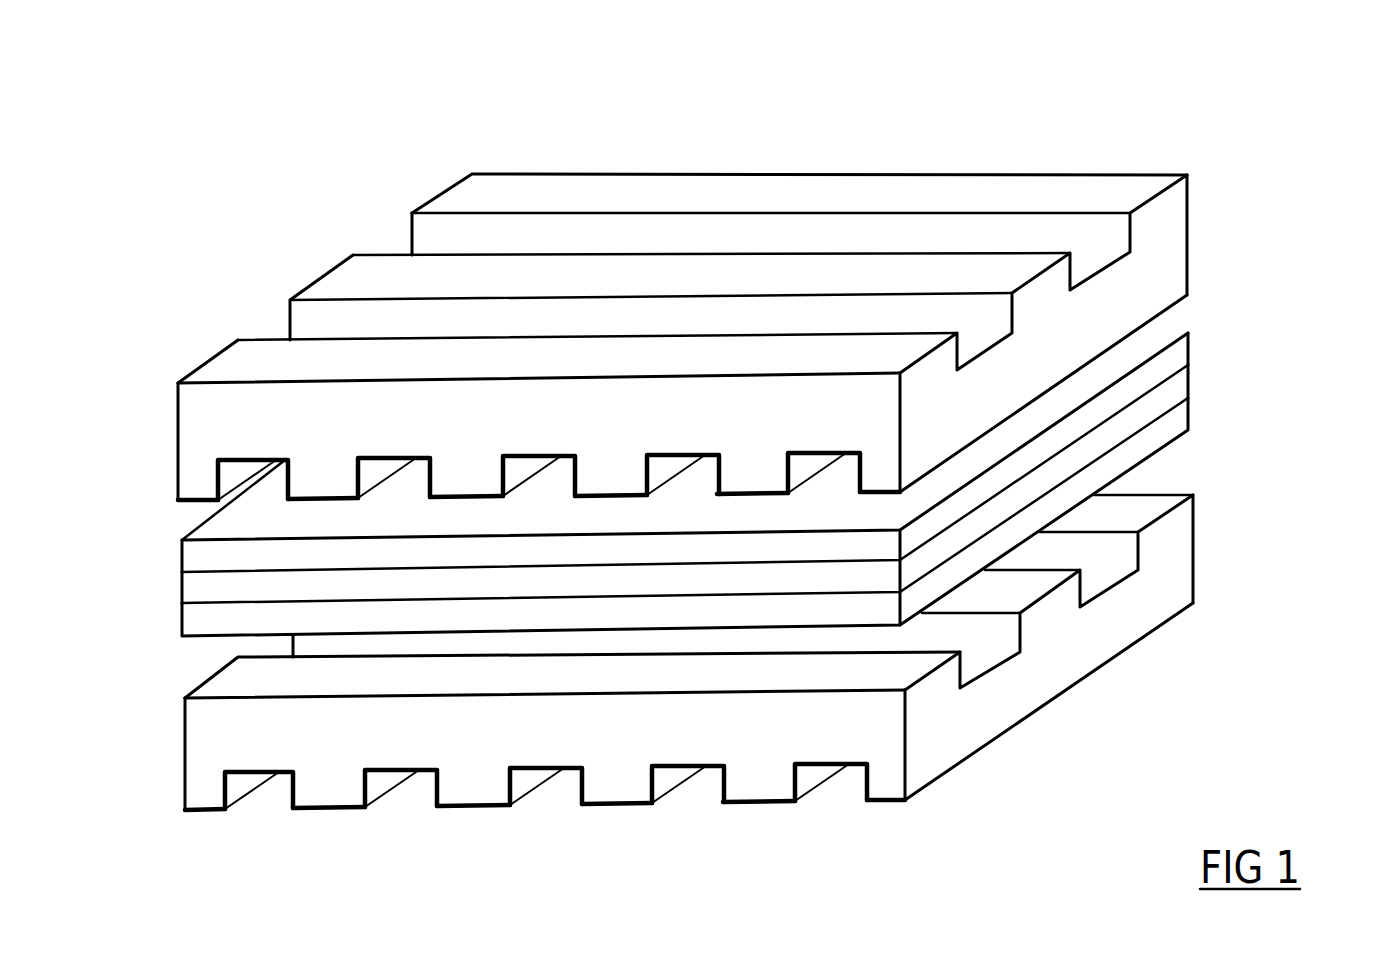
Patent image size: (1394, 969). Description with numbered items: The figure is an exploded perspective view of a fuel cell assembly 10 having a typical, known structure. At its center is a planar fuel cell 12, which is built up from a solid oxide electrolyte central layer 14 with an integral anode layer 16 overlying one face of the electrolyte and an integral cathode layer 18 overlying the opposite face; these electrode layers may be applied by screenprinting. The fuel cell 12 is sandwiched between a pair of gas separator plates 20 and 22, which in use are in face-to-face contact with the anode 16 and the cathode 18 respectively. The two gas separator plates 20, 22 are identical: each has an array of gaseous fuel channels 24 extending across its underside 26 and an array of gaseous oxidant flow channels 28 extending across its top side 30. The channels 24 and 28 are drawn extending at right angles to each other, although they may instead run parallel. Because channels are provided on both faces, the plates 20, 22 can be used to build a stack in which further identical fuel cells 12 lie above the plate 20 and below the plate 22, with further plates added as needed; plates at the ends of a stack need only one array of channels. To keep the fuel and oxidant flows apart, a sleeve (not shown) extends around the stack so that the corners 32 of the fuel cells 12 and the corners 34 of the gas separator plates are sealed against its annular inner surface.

The fuel cell assembly 10 is at (365, 118).
The planar fuel cell 12 is at (734, 528).
The solid oxide electrolyte central layer 14 is at (1190, 387).
The anode layer 16 is at (1197, 343).
The cathode layer 18 is at (1190, 432).
The gas separator plate 20 is at (1168, 210).
The gas separator plate 22 is at (1160, 617).
The gaseous fuel channels 24 is at (265, 476).
The underside 26 is at (740, 492).
The gaseous oxidant flow channels 28 is at (1105, 577).
The top side 30 is at (680, 190).
The corners of the fuel cells 32 is at (1190, 363).
The corners of the gas separator plates 34 is at (470, 174).